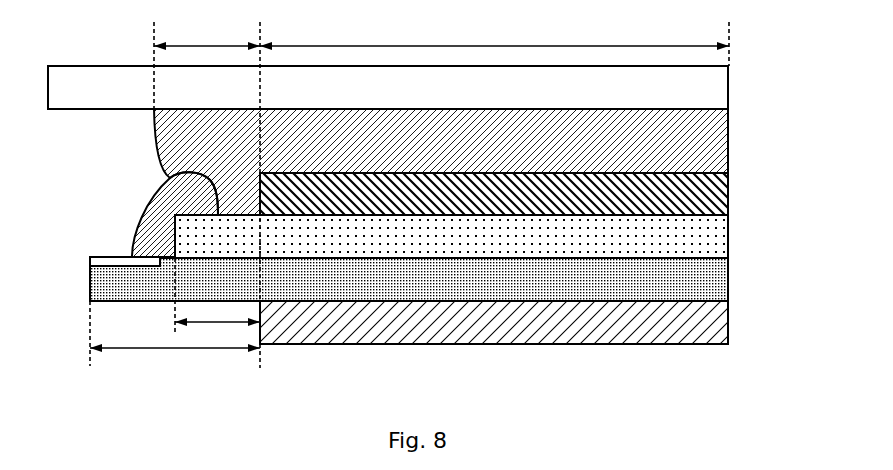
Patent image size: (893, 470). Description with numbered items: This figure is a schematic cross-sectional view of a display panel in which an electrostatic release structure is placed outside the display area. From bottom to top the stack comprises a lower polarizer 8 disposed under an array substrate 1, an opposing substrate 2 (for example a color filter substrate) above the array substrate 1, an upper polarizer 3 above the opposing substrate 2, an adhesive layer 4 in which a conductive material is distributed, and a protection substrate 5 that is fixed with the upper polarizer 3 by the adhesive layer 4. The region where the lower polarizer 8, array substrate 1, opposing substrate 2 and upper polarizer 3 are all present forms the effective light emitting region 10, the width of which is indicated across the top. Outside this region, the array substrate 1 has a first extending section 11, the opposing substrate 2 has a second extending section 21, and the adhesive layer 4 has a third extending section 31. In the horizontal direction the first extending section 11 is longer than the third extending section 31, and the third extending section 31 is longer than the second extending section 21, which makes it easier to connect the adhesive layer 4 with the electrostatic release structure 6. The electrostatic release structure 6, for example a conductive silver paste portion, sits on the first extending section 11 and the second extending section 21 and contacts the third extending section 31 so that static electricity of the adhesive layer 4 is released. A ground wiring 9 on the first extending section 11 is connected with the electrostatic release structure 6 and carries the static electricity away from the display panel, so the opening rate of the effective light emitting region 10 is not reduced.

The array substrate 1 is at (729, 279).
The opposing substrate 2 is at (729, 241).
The upper polarizer 3 is at (729, 194).
The adhesive layer 4 is at (729, 153).
The protection substrate 5 is at (729, 88).
The electrostatic release structure 6 is at (140, 218).
The lower polarizer 8 is at (729, 322).
The ground wiring 9 is at (102, 263).
The effective light emitting region 10 is at (494, 34).
The first extending section 11 is at (175, 362).
The second extending section 21 is at (217, 311).
The third extending section 31 is at (207, 34).